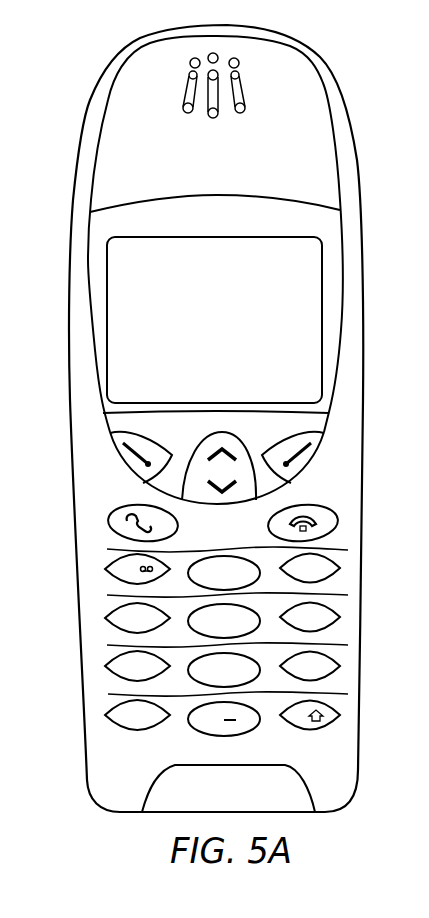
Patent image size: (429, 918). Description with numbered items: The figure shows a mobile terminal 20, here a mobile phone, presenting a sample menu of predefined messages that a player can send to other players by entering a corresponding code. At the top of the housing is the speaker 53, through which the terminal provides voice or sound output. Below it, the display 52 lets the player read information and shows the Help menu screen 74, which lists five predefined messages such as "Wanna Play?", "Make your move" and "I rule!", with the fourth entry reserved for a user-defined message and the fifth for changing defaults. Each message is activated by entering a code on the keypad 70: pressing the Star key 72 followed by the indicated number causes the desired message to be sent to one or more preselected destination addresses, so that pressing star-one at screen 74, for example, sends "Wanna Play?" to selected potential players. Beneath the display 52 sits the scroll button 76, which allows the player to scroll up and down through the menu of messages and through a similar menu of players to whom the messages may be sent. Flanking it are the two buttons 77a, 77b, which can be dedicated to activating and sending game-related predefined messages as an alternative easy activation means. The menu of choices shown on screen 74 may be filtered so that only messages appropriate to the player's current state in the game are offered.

The mobile terminal 20 is at (363, 483).
The display 52 is at (332, 302).
The speaker 53 is at (332, 76).
The keypad 70 is at (335, 563).
The star key 72 is at (112, 716).
The Help menu screen 74 is at (305, 282).
The scroll button 76 is at (248, 488).
The dedicated message button 77a is at (120, 443).
The dedicated message button 77b is at (317, 445).